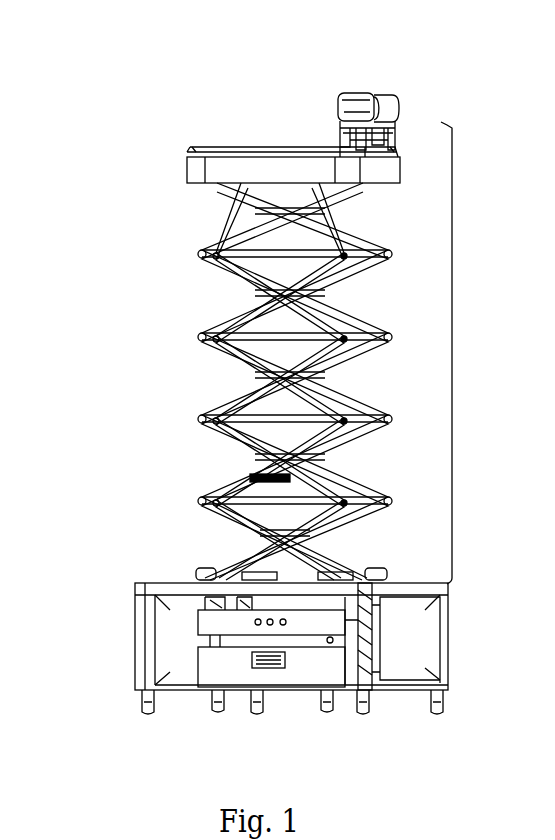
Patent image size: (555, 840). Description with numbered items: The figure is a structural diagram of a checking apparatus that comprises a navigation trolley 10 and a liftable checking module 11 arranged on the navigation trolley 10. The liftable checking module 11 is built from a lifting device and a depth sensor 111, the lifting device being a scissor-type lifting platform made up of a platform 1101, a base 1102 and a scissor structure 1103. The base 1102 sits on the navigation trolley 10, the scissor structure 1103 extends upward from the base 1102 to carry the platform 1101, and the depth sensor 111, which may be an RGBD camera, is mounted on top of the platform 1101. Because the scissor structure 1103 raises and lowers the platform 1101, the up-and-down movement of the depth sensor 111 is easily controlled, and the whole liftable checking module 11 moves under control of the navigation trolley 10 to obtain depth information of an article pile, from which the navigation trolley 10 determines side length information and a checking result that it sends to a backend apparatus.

The navigation trolley 10 is at (293, 688).
The liftable checking module 11 is at (452, 352).
The depth sensor 111 is at (362, 93).
The platform 1101 is at (236, 148).
The base 1102 is at (135, 583).
The scissor structure 1103 is at (203, 335).